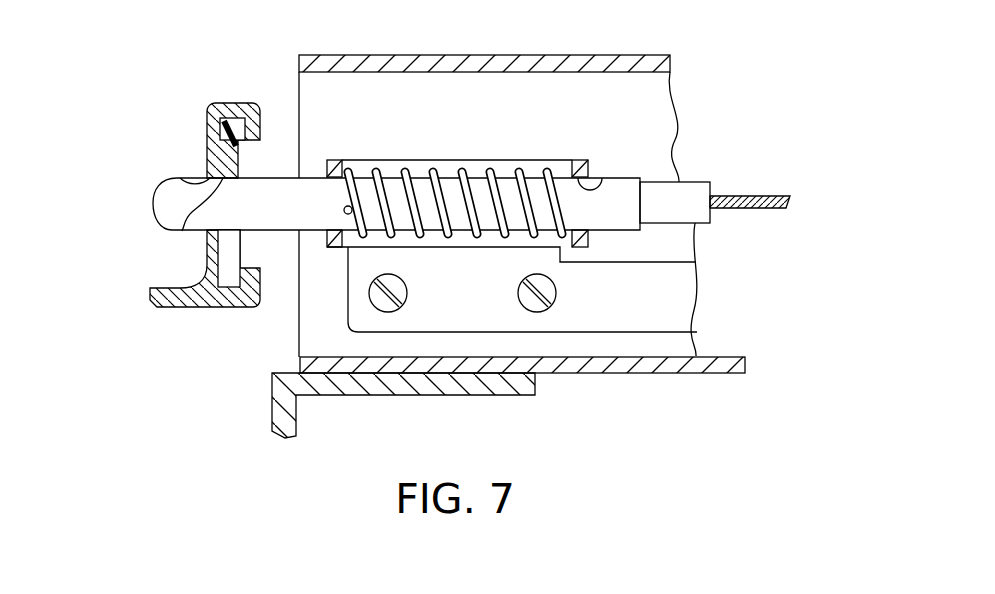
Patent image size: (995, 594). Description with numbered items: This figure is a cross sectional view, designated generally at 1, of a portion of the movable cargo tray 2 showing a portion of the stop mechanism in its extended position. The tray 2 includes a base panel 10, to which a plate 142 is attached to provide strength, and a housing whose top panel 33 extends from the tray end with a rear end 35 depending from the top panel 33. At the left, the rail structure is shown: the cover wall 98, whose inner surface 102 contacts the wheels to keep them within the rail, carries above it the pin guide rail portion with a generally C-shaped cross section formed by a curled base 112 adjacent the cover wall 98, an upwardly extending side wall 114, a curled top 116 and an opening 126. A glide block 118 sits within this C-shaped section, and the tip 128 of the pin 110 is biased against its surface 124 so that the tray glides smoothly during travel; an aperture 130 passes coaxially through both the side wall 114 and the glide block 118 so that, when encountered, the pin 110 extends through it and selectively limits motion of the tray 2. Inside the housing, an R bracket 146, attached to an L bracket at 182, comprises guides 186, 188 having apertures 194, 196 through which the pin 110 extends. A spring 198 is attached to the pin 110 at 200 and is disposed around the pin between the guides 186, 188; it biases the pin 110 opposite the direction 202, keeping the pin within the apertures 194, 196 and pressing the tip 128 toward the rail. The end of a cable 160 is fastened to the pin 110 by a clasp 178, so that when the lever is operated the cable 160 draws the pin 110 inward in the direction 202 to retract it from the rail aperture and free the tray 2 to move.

The assembly 1 is at (122, 108).
The tray 2 is at (770, 227).
The base panel 10 is at (675, 346).
The top panel 33 is at (645, 54).
The rear end 35 is at (675, 145).
The cover wall 98 is at (152, 288).
The inner surface 102 is at (195, 308).
The pin 110 is at (279, 193).
The curled base 112 is at (255, 308).
The side wall 114 is at (207, 122).
The curled top 116 is at (195, 200).
The glide block 118 is at (262, 156).
The surface 124 is at (243, 260).
The opening 126 is at (300, 133).
The tip 128 is at (153, 203).
The aperture 130 is at (179, 178).
The plate 142 is at (470, 395).
The R bracket 146 is at (626, 313).
The cable 160 is at (768, 196).
The clasp 178 is at (698, 183).
The attachment point 182 is at (400, 288).
The guide 186 is at (580, 160).
The guide 188 is at (340, 160).
The aperture 194 is at (344, 210).
The aperture 196 is at (603, 178).
The spring 198 is at (456, 160).
The attachment point 200 is at (352, 216).
The direction 202 is at (435, 103).